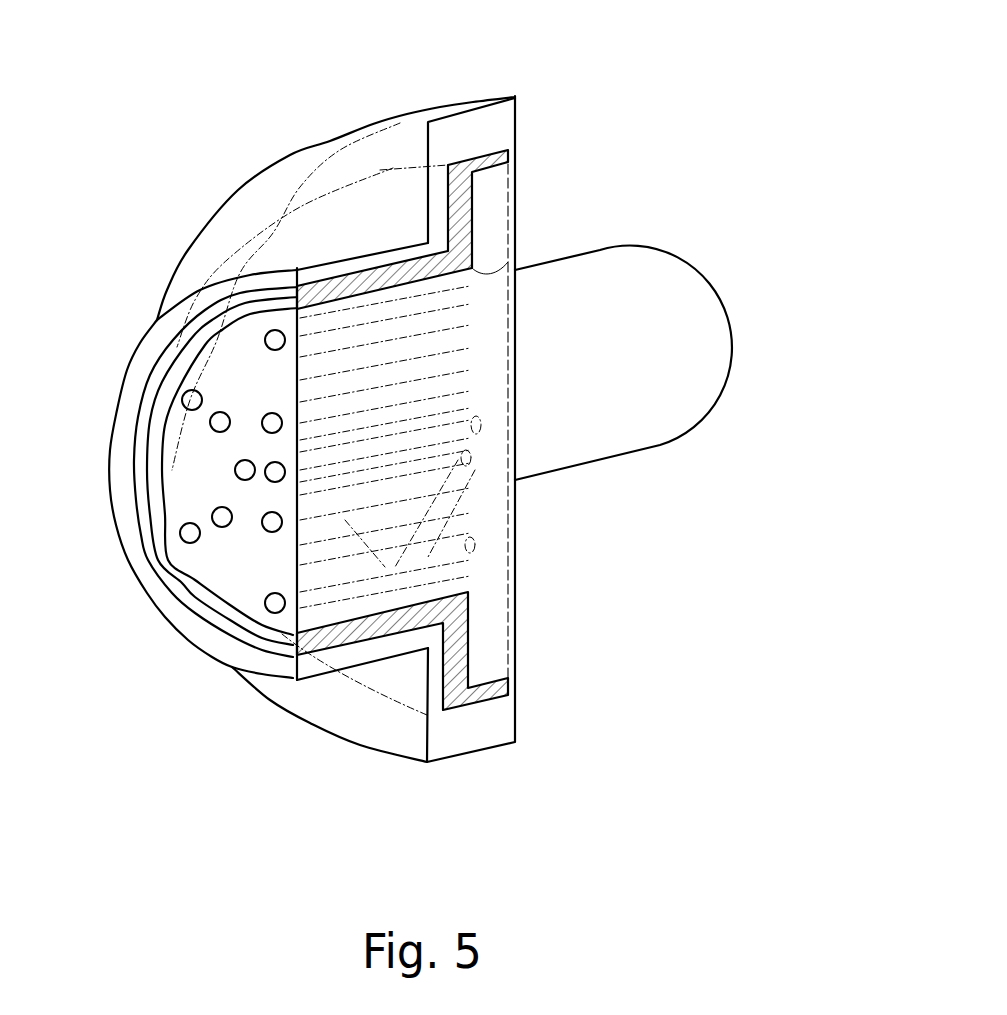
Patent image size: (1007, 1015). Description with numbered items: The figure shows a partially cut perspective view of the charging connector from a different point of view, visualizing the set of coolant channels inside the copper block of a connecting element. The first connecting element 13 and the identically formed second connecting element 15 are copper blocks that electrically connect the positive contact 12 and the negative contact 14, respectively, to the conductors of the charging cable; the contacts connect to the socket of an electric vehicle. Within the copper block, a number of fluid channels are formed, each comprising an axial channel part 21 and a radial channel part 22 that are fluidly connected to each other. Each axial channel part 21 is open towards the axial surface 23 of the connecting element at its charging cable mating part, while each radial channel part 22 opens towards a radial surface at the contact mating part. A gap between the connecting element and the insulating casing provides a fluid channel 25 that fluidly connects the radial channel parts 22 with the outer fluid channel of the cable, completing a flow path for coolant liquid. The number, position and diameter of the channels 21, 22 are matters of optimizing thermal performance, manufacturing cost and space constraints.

The first connecting element 13 is at (336, 386).
The second connecting element 15 is at (276, 116).
The positive contact 12 is at (690, 363).
The negative contact 14 is at (710, 329).
The axial channel part 21 is at (266, 344).
The radial channel part 22 is at (450, 347).
The axial surface 23 is at (232, 566).
The gap / fluid channel 25 is at (462, 745).